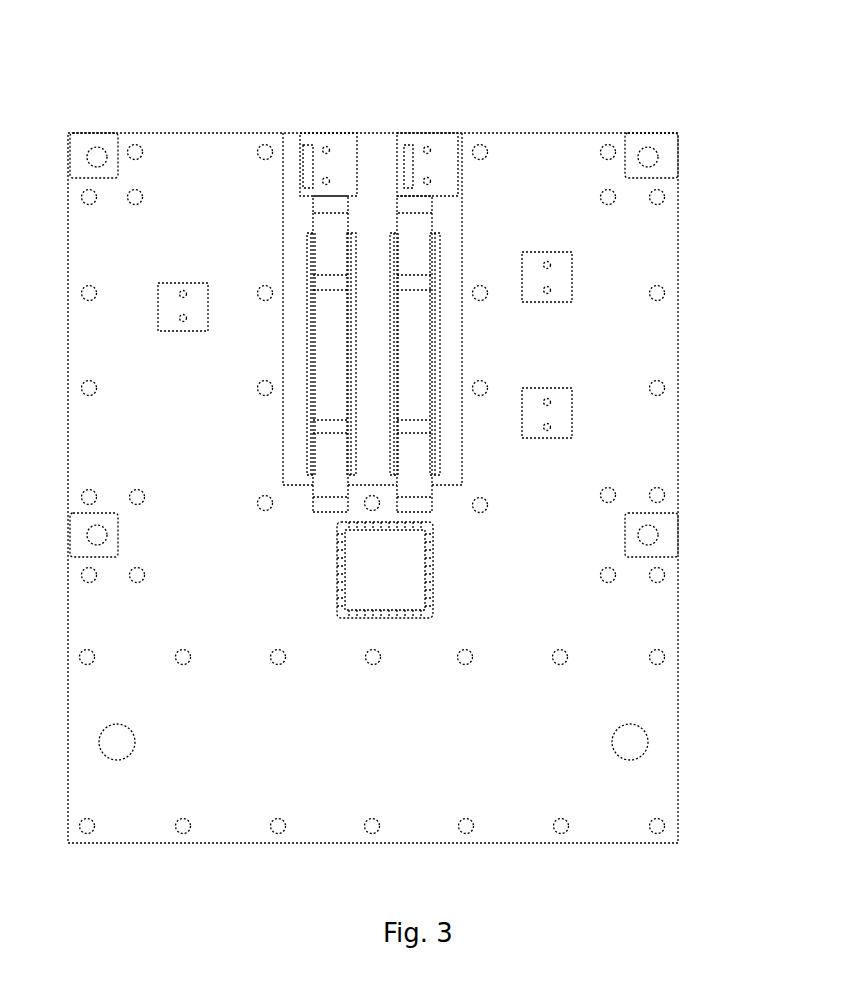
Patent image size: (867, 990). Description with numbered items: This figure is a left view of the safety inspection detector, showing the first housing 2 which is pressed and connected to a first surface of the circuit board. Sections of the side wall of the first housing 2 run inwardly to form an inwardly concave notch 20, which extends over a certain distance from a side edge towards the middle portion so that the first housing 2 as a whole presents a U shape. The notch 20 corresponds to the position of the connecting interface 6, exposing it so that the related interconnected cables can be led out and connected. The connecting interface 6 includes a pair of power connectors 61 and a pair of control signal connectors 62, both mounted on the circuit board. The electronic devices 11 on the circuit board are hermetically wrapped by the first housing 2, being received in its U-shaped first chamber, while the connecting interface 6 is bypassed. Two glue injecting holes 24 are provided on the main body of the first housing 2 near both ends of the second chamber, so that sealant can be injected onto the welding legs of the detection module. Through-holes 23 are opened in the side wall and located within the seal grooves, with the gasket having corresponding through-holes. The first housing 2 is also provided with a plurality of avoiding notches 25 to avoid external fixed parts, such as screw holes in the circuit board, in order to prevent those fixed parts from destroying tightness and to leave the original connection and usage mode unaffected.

The first housing 2 is at (667, 347).
The connecting interface 6 is at (452, 62).
The power connectors 61 is at (328, 152).
The control signal connectors 62 is at (393, 250).
The notch 20 is at (293, 137).
The electronic devices 11 is at (180, 333).
The avoiding notches 25 is at (663, 155).
The glue injecting holes 24 is at (633, 737).
The through-holes 23 is at (663, 826).